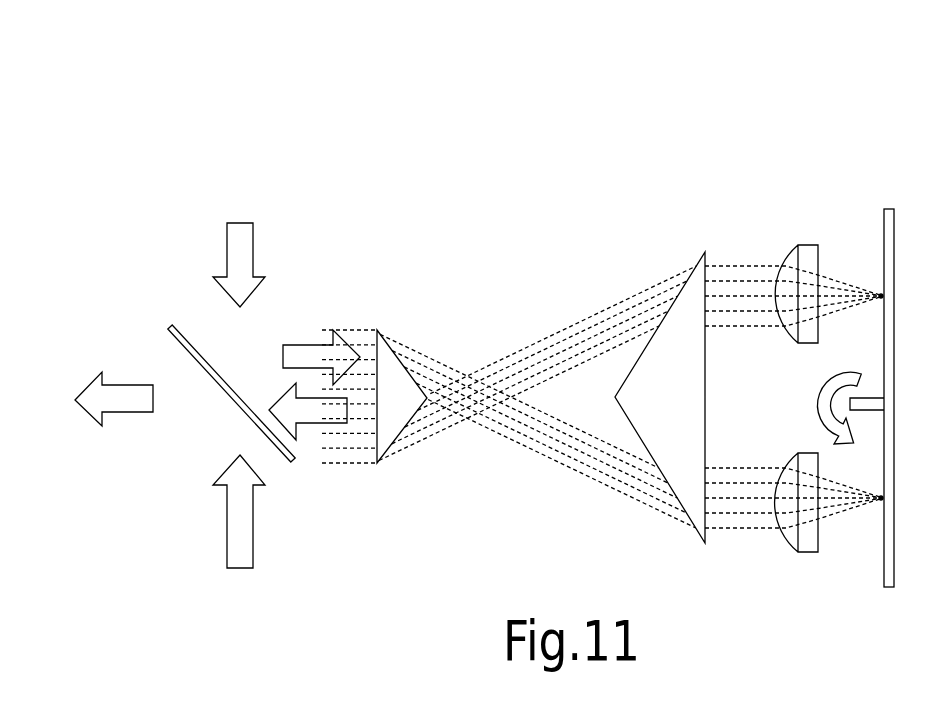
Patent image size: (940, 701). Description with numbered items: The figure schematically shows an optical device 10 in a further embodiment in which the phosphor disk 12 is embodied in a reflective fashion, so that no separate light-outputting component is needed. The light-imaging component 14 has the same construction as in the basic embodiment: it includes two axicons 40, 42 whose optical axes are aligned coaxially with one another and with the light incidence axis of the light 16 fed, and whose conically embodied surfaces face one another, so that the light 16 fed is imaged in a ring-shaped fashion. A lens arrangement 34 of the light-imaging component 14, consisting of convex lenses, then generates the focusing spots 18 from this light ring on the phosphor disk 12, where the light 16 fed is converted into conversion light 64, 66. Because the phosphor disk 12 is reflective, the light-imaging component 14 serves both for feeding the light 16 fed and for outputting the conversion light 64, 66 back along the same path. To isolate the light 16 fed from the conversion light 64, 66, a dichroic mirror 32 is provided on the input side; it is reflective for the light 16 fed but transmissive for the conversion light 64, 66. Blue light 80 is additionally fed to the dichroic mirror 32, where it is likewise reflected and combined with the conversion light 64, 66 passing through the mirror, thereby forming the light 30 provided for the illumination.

The optical device 10 is at (597, 130).
The phosphor disk 12 is at (888, 210).
The light-imaging component 14 is at (493, 283).
The light fed 16 is at (246, 252).
The focusing spots 18 is at (880, 294).
The light provided for the illumination 30 is at (128, 413).
The dichroic mirror 32 is at (193, 346).
The lens arrangement 34 is at (796, 361).
The first axicon 40 is at (386, 338).
The second axicon 42 is at (678, 318).
The conversion light 64 is at (847, 283).
The conversion light 66 is at (847, 507).
The blue light 80 is at (250, 517).